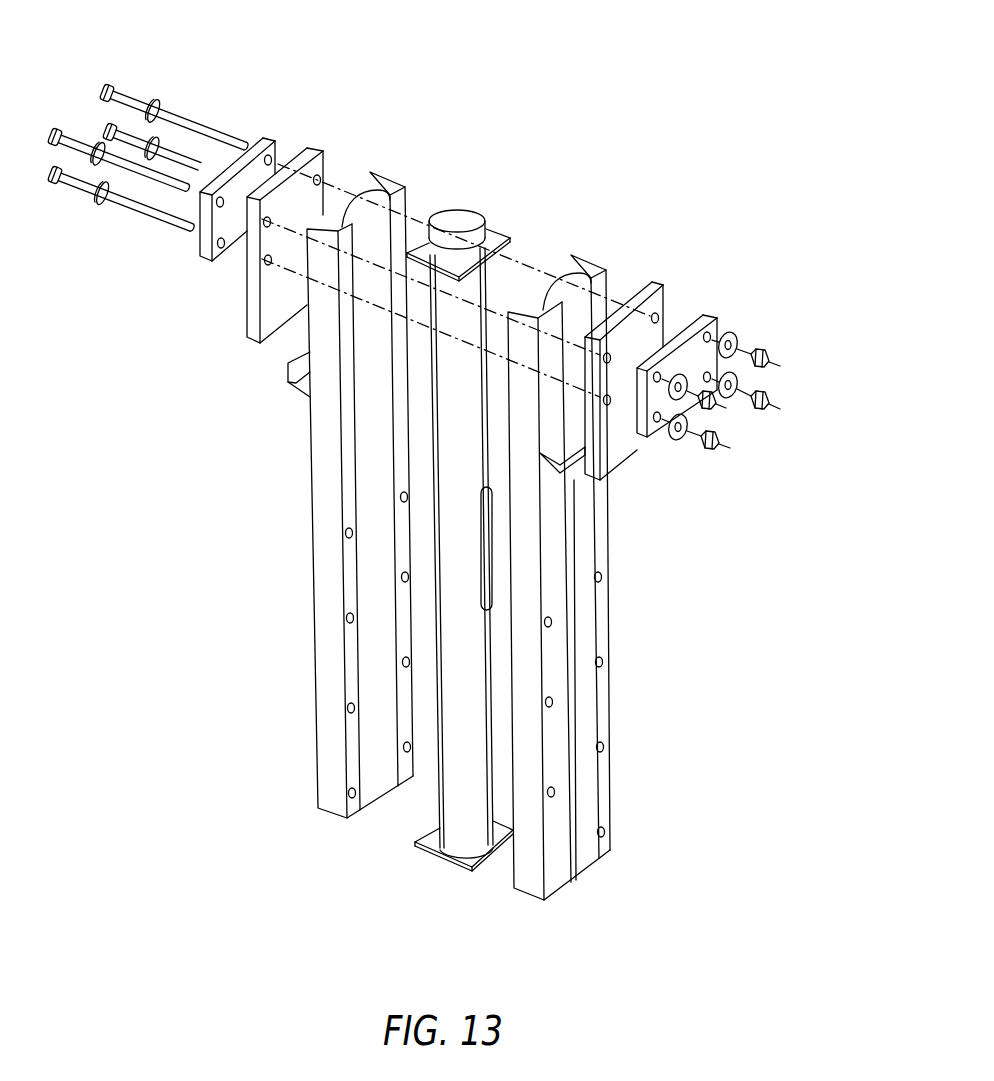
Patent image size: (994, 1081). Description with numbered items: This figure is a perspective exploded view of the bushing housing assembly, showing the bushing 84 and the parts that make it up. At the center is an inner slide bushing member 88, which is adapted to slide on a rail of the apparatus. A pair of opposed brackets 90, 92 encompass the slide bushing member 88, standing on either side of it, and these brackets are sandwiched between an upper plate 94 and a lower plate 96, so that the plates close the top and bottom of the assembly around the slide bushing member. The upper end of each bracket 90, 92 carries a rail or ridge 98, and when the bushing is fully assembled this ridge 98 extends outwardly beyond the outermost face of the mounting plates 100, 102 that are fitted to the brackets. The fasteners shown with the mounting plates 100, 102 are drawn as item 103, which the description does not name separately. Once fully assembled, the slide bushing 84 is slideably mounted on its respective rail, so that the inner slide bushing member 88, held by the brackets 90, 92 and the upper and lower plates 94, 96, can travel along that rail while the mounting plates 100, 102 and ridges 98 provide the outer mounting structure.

The bushing 84 is at (563, 214).
The inner slide bushing member 88 is at (480, 683).
The bracket 90 is at (332, 790).
The bracket 92 is at (587, 858).
The upper plate 94 is at (497, 232).
The lower plate 96 is at (443, 857).
The rail or ridge 98 is at (295, 377).
The mounting plate 100 is at (320, 160).
The mounting plate 102 is at (272, 138).
The bolts and nuts 103 is at (220, 253).